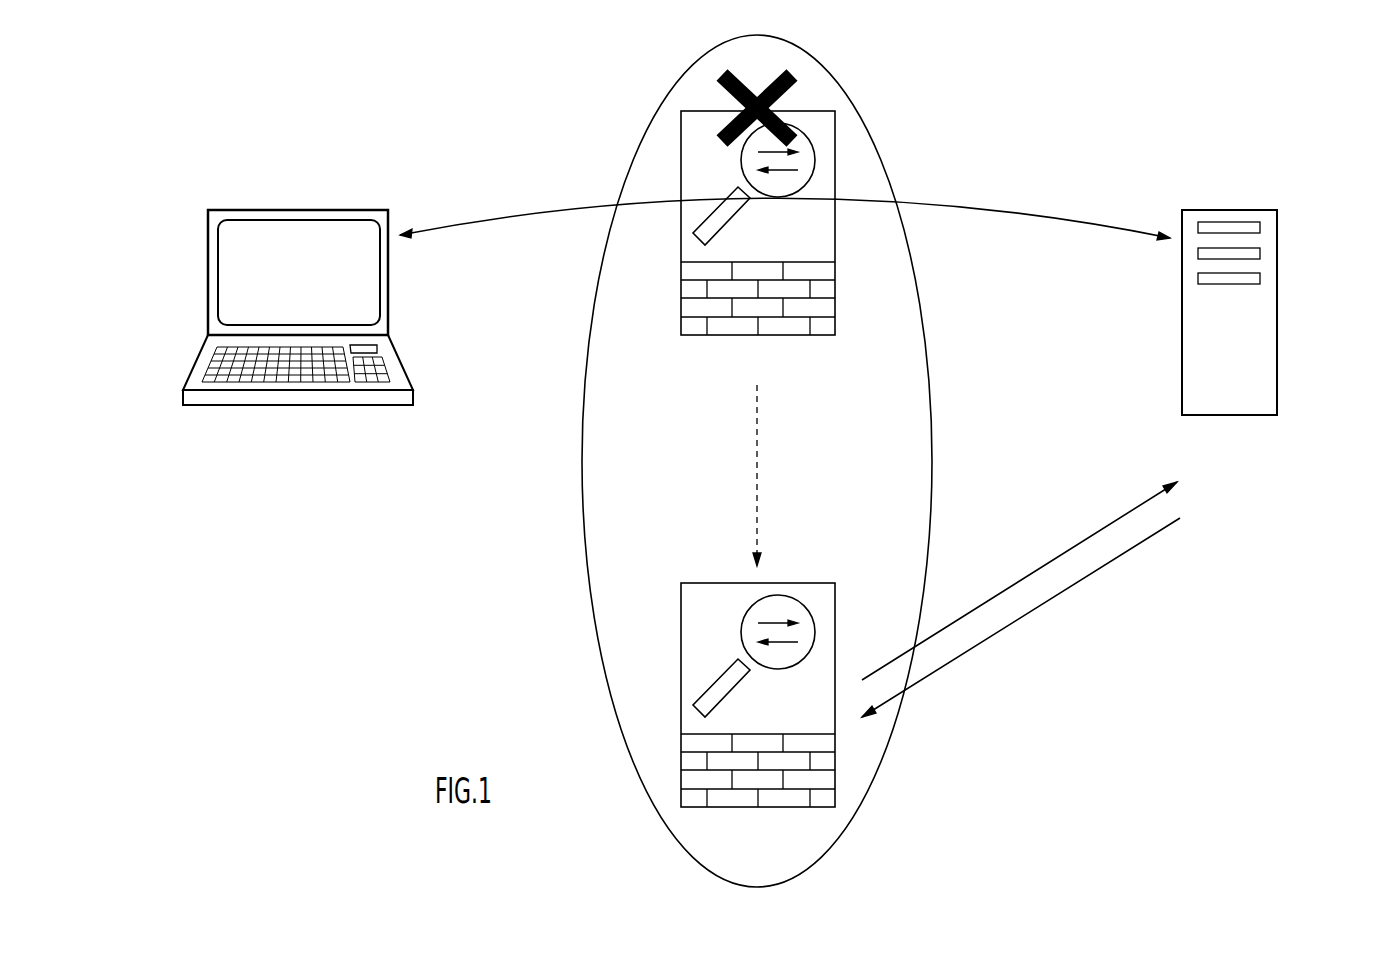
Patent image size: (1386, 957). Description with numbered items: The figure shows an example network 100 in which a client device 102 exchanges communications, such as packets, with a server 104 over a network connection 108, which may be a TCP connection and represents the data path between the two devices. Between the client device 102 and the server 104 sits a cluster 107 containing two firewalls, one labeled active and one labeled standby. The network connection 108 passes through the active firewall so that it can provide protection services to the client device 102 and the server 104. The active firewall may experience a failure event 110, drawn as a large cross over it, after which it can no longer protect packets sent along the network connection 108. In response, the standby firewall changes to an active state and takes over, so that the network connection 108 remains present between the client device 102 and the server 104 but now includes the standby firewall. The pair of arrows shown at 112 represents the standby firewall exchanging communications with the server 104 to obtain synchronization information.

The network 100 is at (492, 75).
The client device 102 is at (314, 210).
The server 104 is at (1277, 265).
The cluster of firewalls 107 is at (924, 350).
The network connection 108 is at (995, 202).
The failure event 110 is at (793, 80).
The exchange of communications for synchronization information 112 is at (1186, 468).